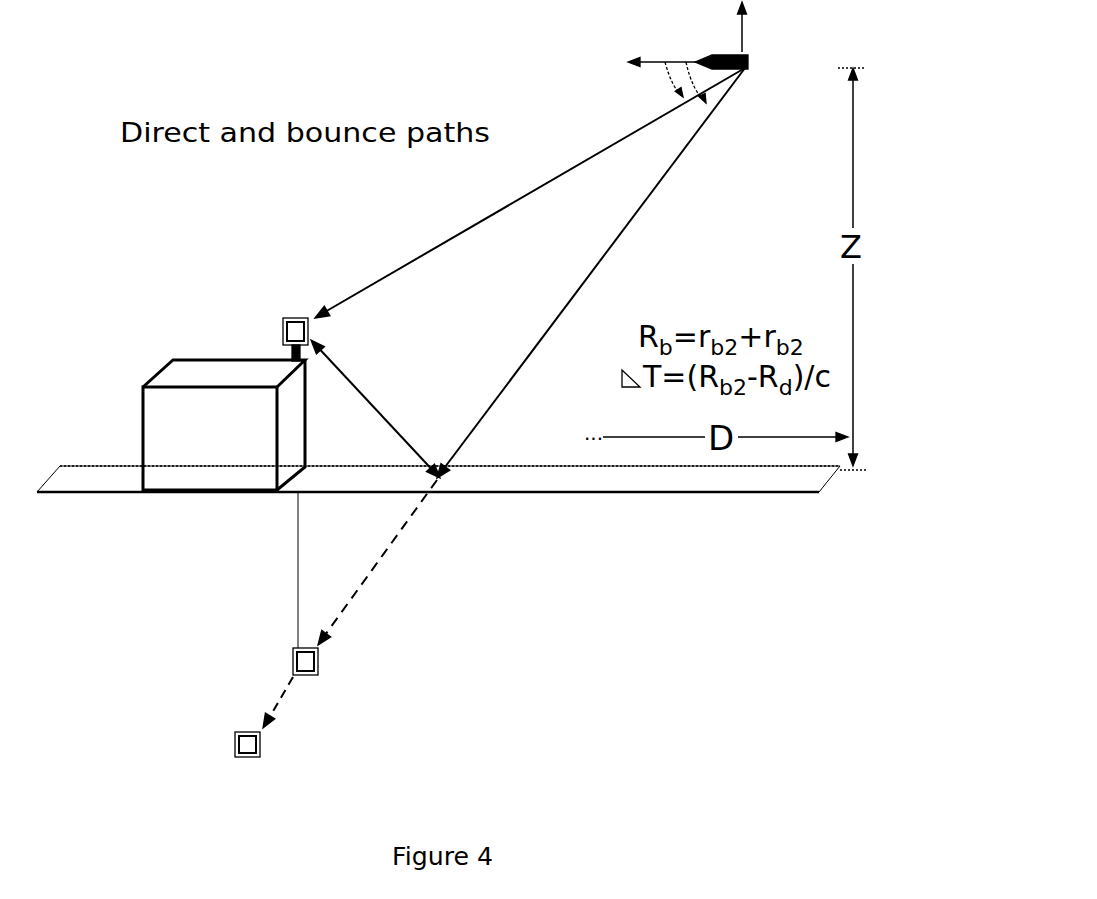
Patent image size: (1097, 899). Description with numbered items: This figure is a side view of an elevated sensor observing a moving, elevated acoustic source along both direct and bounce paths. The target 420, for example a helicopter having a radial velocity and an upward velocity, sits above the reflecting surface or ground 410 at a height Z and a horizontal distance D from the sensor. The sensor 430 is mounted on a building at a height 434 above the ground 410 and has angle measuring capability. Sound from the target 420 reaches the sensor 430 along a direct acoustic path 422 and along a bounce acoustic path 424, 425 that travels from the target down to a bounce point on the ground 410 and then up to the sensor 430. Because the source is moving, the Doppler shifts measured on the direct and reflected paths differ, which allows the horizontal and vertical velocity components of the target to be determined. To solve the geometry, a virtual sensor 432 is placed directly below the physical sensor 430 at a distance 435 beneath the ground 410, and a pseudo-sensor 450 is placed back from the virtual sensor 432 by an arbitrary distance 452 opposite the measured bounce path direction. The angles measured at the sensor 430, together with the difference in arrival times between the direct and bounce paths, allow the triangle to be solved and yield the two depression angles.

The reflecting surface/ground 410 is at (726, 495).
The target 420 is at (742, 75).
The direct acoustic path 422 is at (568, 161).
The bounce acoustic path 424 is at (665, 178).
The bounce acoustic path 425 is at (373, 398).
The sensor 430 is at (297, 310).
The virtual sensor 432 is at (293, 698).
The sensor height 434 is at (307, 455).
The virtual sensor depth 435 is at (294, 553).
The pseudo-sensor 450 is at (246, 765).
The pseudo-sensor offset distance 452 is at (266, 745).